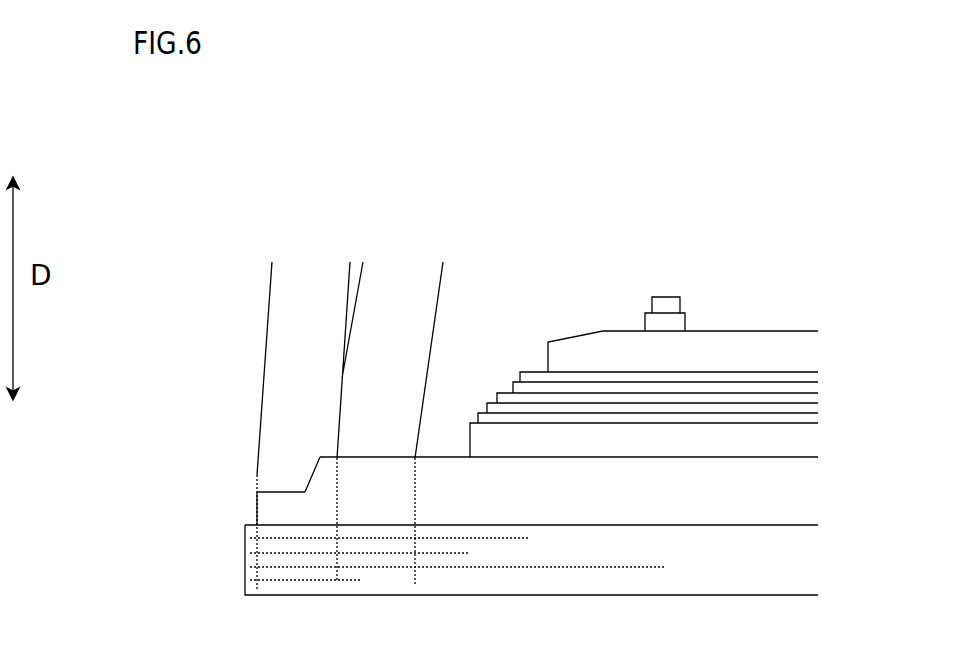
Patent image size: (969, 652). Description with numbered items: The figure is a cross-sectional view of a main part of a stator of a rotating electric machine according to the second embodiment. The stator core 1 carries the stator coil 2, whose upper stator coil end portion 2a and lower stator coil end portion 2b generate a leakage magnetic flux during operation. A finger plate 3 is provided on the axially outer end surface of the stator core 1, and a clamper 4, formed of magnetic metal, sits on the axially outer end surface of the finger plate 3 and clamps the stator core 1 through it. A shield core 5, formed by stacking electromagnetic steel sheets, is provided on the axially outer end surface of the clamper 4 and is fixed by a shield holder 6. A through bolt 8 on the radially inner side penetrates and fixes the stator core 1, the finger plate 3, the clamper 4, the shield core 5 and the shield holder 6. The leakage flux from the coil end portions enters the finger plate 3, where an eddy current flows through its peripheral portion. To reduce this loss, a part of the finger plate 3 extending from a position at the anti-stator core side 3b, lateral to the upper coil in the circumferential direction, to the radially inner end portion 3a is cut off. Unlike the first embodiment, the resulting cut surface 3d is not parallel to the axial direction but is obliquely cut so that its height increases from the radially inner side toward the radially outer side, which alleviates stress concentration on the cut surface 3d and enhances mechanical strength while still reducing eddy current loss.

The stator core 1 is at (247, 563).
The stator coil 2 is at (267, 429).
The upper stator coil end portion 2a is at (272, 322).
The lower stator coil end portion 2b is at (416, 297).
The finger plate 3 is at (795, 490).
The radially inner end portion 3a is at (253, 500).
The anti-stator core side 3b is at (323, 476).
The cut surface 3d is at (313, 484).
The clamper 4 is at (808, 435).
The shield core 5 is at (812, 380).
The shield holder 6 is at (763, 343).
The through bolt 8 is at (673, 305).